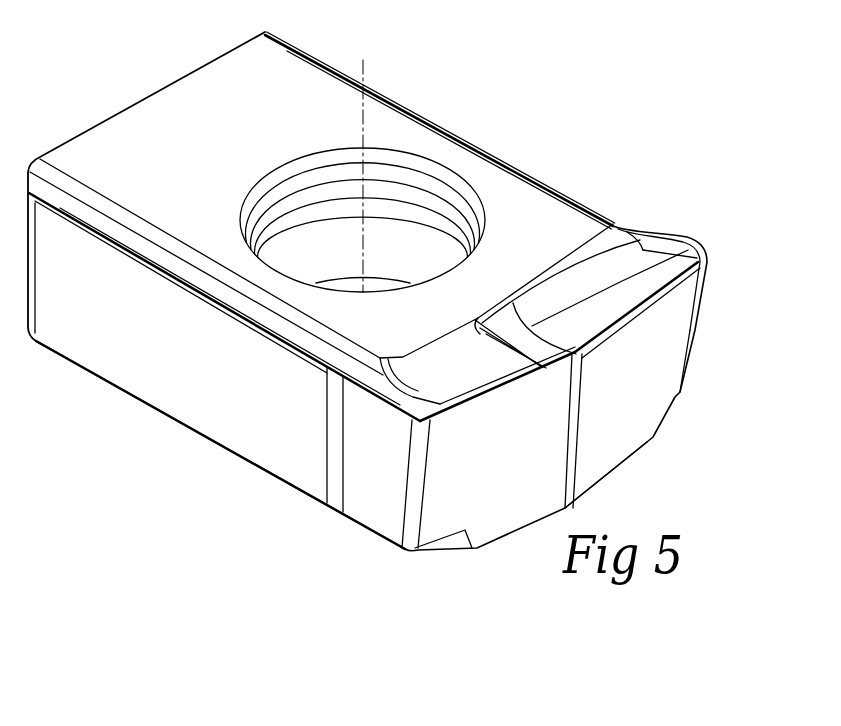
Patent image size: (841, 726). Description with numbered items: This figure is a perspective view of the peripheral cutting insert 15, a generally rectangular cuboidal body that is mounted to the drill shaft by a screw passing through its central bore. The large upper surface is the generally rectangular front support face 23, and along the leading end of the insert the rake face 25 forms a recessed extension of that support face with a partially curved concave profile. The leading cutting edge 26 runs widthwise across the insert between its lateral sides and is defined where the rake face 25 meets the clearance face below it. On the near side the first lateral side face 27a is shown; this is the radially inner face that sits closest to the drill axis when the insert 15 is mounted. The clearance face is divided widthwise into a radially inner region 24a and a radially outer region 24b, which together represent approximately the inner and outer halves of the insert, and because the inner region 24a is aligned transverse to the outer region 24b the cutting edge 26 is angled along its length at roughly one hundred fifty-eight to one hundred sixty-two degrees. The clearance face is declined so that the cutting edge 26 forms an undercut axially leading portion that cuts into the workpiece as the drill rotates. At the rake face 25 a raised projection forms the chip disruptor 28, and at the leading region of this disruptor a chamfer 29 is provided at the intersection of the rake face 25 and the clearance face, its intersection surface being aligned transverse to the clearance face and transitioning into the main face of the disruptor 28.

The peripheral insert 15 is at (470, 70).
The front support face 23 is at (242, 148).
The radially inner region of clearance face 24a is at (493, 507).
The radially outer region of clearance face 24b is at (615, 433).
The rake face 25 is at (594, 277).
The leading cutting edge 26 is at (658, 298).
The first lateral side face 27a is at (131, 338).
The chip disruptor 28 is at (457, 367).
The chamfer 29 is at (504, 390).